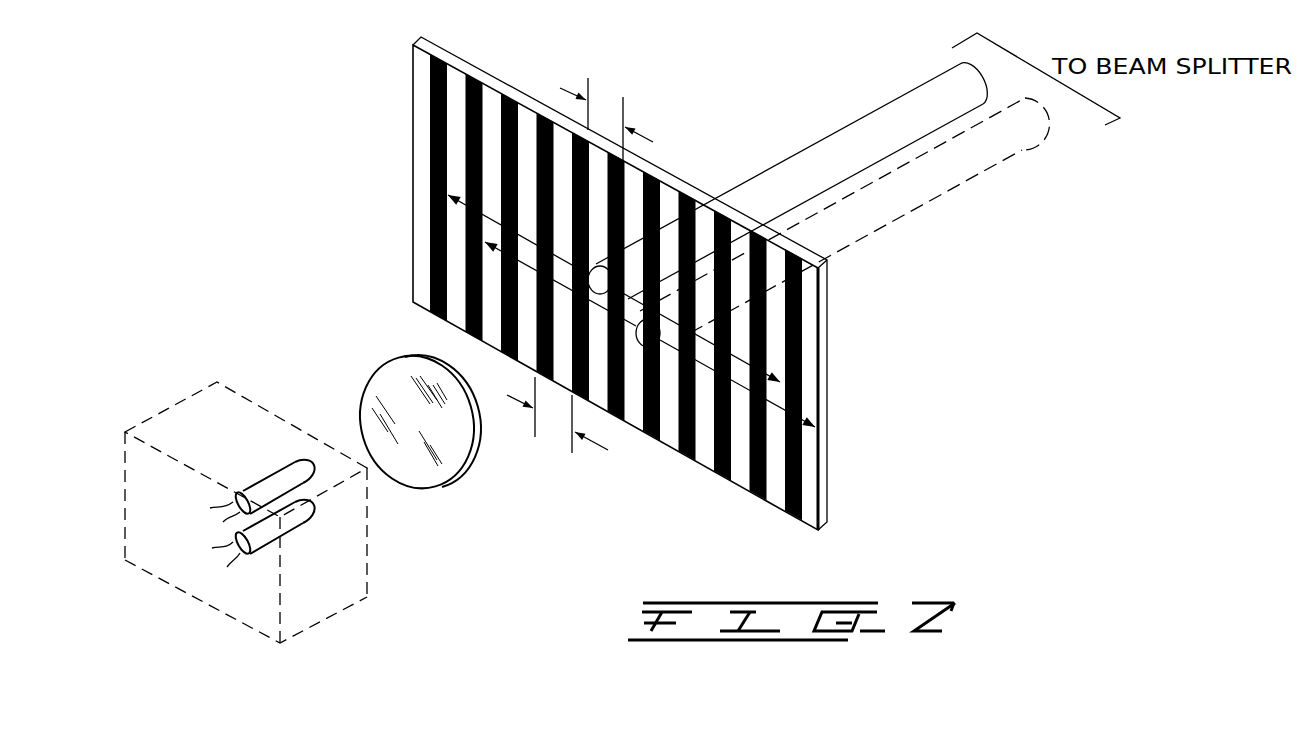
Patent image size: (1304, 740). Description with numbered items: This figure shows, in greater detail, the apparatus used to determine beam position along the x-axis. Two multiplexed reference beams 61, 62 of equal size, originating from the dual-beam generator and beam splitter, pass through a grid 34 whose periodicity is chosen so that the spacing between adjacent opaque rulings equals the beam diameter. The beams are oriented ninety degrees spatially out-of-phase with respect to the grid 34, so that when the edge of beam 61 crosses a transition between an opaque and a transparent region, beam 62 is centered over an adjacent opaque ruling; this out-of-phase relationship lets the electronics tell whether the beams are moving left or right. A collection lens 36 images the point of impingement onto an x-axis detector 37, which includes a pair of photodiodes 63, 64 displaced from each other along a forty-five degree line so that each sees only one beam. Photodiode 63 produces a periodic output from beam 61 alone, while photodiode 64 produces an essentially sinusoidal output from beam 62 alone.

The grid 34 is at (827, 357).
The collection lens 36 is at (374, 370).
The x-axis detector 37 is at (195, 392).
The reference beam 61 is at (840, 130).
The reference beam 62 is at (993, 176).
The photodiode 63 is at (258, 482).
The photodiode 64 is at (295, 528).